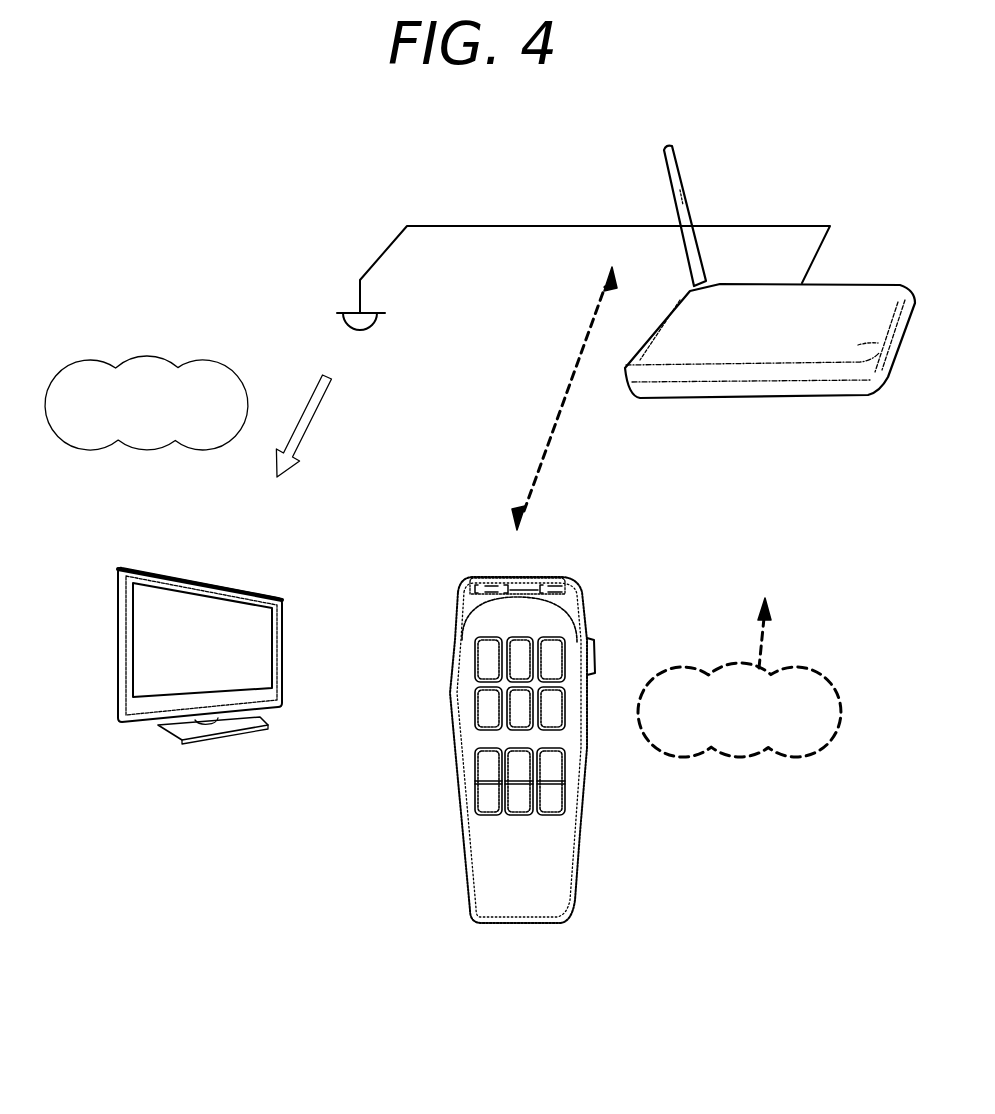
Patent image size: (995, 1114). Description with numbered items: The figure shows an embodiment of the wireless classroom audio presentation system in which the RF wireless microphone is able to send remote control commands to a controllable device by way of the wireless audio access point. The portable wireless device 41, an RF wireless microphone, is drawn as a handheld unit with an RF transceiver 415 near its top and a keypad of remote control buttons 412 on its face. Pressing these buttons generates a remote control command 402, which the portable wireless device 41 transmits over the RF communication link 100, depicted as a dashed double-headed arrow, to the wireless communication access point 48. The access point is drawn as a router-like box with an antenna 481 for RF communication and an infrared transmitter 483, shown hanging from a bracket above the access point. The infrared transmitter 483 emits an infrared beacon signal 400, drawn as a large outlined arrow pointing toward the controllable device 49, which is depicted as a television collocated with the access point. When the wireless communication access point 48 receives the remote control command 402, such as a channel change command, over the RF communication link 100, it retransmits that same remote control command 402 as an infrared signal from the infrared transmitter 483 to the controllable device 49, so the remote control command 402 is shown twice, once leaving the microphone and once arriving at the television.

The wireless communication access point 48 is at (786, 398).
The antenna 481 is at (663, 153).
The infrared transmitter 483 is at (337, 311).
The infrared beacon signal 400 is at (316, 424).
The remote control command 402 is at (145, 357).
The RF communication link 100 is at (542, 463).
The controllable device 49 is at (118, 573).
The portable wireless device 41 is at (575, 833).
The RF transceiver 415 is at (577, 592).
The remote control buttons 412 is at (473, 800).